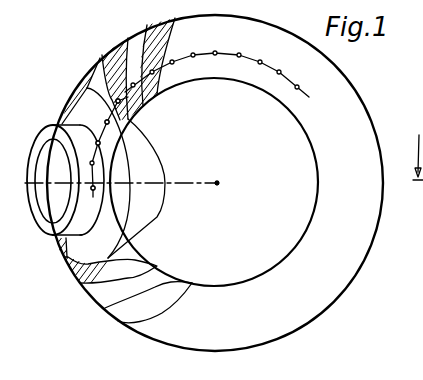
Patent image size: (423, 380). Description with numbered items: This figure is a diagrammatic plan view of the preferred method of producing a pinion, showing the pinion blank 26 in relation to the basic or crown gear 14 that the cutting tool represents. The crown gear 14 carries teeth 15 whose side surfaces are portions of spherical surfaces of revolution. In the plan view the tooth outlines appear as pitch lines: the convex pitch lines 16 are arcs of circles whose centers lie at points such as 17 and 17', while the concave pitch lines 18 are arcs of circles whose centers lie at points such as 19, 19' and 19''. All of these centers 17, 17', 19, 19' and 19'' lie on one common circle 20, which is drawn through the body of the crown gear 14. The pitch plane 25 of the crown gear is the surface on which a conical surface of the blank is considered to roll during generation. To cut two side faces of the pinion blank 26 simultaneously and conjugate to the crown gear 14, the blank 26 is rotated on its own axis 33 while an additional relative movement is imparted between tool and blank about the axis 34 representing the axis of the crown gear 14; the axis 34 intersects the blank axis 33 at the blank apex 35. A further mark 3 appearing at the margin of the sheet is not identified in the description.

The crown gear 14 is at (297, 333).
The teeth 15 is at (127, 313).
The convex pitch lines 16 is at (167, 307).
The center 17 is at (119, 151).
The center 17' is at (112, 148).
The concave pitch lines 18 is at (130, 303).
The center 19 is at (77, 166).
The center 19' is at (95, 114).
The center 19'' is at (138, 67).
The circle 20 is at (245, 57).
The pitch plane 25 is at (410, 166).
The pinion blank 26 is at (140, 140).
The blank axis 33 is at (177, 182).
The crown gear axis 34 is at (217, 183).
The blank apex 35 is at (218, 182).
The reference 3 is at (419, 129).